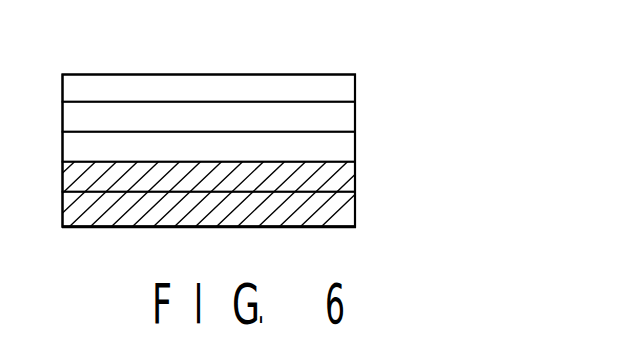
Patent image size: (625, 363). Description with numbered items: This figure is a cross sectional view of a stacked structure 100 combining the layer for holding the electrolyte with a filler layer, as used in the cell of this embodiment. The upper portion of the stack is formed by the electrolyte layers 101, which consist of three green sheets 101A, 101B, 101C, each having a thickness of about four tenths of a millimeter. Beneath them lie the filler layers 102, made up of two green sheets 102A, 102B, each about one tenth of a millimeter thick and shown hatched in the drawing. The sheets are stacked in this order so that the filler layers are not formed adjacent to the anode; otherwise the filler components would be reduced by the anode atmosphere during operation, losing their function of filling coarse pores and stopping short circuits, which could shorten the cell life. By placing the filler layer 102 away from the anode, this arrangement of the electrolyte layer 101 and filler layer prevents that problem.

The laminated structure 100 is at (304, 72).
The electrolyte layers 101 is at (465, 72).
The electrolyte layer green sheet 101A is at (355, 90).
The electrolyte layer green sheet 101B is at (355, 120).
The electrolyte layer green sheet 101C is at (355, 150).
The lower layer group 102 is at (465, 173).
The filler layer green sheet 102A is at (355, 178).
The filler layer green sheet 102B is at (355, 210).